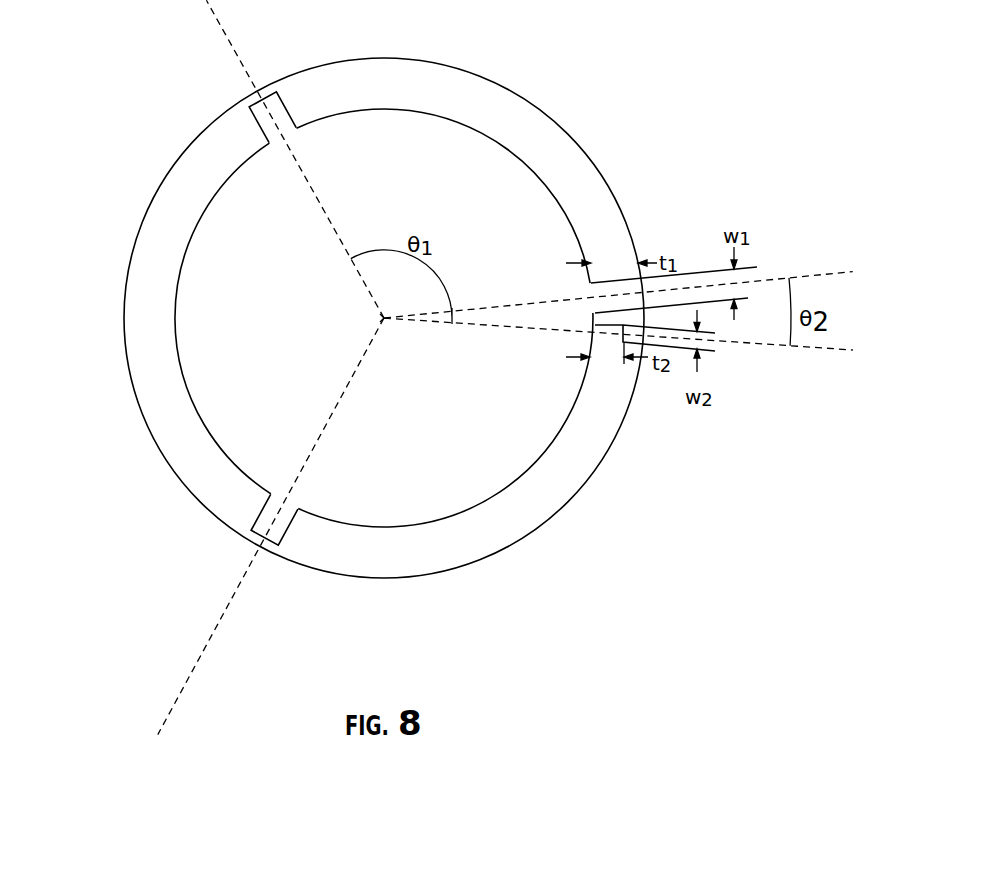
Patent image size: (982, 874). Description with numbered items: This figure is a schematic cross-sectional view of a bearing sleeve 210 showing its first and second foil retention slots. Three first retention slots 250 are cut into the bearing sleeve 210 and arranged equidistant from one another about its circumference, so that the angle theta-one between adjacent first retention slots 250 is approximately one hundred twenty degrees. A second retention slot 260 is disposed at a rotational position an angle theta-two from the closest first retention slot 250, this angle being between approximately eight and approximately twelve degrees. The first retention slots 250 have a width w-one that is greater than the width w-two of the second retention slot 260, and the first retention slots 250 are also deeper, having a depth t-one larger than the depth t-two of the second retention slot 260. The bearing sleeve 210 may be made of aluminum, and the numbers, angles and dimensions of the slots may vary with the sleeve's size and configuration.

The bearing sleeve 210 is at (124, 299).
The first retention slots 250 is at (286, 106).
The second retention slot 260 is at (606, 346).